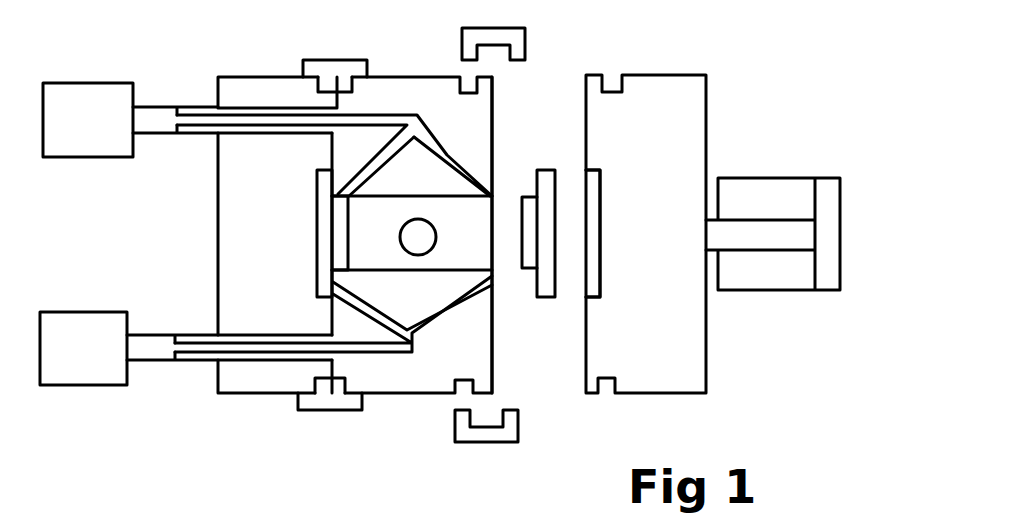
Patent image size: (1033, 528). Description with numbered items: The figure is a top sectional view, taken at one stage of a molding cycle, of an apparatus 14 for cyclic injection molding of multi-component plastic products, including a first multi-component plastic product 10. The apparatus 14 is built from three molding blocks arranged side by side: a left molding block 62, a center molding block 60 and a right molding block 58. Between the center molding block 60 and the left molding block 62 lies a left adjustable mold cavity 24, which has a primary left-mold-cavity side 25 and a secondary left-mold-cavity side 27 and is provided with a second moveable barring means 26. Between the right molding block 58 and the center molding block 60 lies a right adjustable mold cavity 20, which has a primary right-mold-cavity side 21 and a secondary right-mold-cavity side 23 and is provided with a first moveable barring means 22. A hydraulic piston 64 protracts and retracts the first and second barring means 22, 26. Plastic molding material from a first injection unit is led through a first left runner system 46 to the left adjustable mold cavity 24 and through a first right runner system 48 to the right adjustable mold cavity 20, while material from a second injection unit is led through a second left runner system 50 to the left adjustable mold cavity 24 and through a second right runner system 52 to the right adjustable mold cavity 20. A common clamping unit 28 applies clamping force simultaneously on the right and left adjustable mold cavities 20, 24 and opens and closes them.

The apparatus 14 is at (190, 458).
The center molding block 60 is at (380, 90).
The left molding block 62 is at (232, 90).
The secondary left-mold-cavity side 27 is at (320, 185).
The left adjustable mold cavity 24 is at (326, 234).
The primary left-mold-cavity side 25 is at (323, 266).
The second left runner system 50 is at (358, 182).
The second right runner system 52 is at (467, 135).
The second moveable barring means 26 is at (366, 222).
The first moveable barring means 22 is at (482, 194).
The hydraulic piston 64 is at (436, 236).
The secondary right-mold-cavity side 23 is at (492, 262).
The first right runner system 48 is at (453, 300).
The first left runner system 46 is at (343, 297).
The first multi-component plastic product 10 is at (530, 257).
The right molding block 58 is at (650, 92).
The right adjustable mold cavity 20 is at (603, 226).
The primary right-mold-cavity side 21 is at (591, 185).
The common clamping unit 28 is at (826, 202).